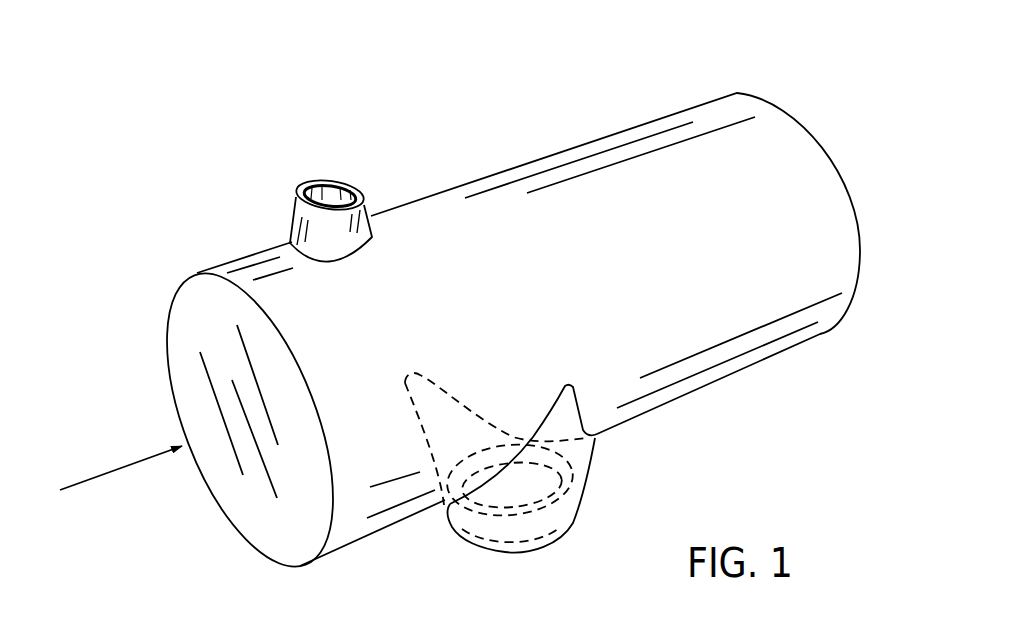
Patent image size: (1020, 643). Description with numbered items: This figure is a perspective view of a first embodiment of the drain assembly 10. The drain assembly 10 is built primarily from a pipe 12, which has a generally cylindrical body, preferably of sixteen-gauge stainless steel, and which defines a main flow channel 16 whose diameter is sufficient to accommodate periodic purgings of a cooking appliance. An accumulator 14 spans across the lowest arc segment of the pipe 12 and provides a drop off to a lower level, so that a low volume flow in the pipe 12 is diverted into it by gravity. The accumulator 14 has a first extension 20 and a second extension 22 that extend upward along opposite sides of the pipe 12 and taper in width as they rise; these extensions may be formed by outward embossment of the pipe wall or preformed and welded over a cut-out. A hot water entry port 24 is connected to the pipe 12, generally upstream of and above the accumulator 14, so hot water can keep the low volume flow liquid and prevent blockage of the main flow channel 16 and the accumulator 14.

The drain assembly 10 is at (456, 331).
The pipe 12 is at (528, 368).
The accumulator 14 is at (296, 447).
The main flow channel 16 is at (121, 527).
The first extension 20 is at (595, 469).
The second extension 22 is at (448, 392).
The hot water entry port 24 is at (278, 141).